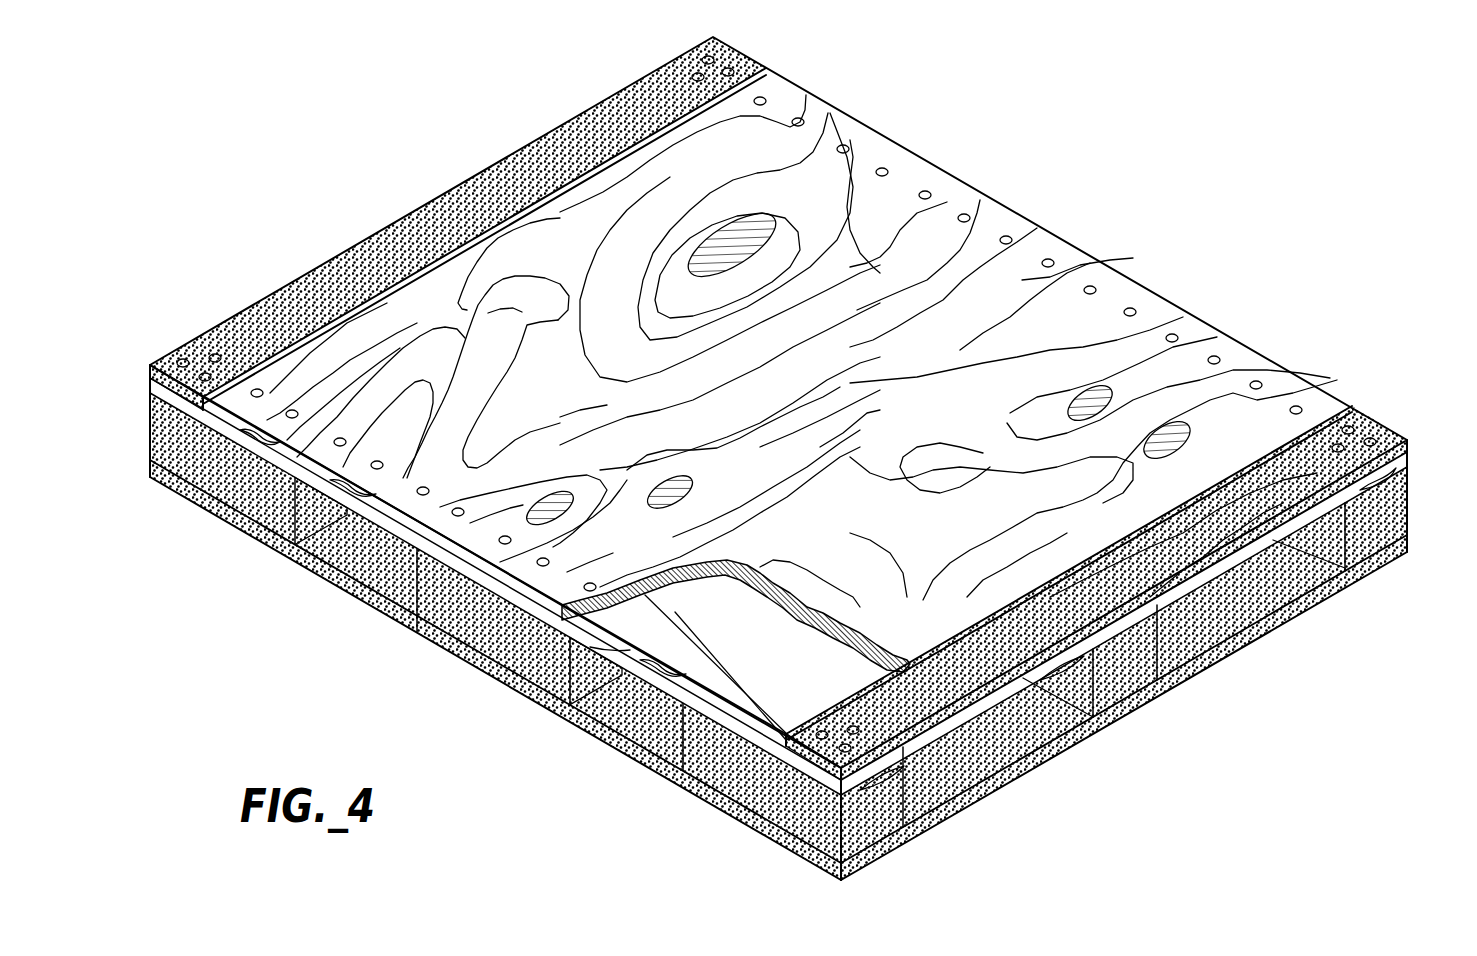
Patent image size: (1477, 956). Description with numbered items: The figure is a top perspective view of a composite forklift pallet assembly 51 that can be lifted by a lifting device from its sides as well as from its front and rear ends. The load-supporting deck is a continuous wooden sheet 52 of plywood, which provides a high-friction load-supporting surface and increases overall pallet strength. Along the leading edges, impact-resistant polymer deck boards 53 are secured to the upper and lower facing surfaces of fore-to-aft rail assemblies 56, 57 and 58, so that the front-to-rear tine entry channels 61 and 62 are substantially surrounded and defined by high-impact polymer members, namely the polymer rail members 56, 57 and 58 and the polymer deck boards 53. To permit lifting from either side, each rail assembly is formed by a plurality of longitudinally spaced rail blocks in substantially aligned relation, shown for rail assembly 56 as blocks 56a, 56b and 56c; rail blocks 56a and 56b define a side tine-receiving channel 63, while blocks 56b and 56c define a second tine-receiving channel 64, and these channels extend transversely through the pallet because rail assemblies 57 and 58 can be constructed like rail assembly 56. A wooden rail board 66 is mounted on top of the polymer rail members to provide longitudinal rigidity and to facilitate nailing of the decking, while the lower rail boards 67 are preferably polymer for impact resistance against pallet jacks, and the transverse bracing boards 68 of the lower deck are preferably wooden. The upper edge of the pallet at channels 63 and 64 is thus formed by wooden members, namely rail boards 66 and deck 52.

The composite forklift pallet assembly 51 is at (1093, 154).
The sheet of plywood 52 is at (540, 212).
The polymer deck boards 53 is at (390, 235).
The rail assembly 56 is at (868, 818).
The rail block 56a is at (722, 780).
The rail block 56b is at (440, 608).
The rail block 56c is at (192, 468).
The rail assembly 57 is at (1122, 678).
The rail assembly 58 is at (1375, 538).
The tine entry channel 61 is at (930, 778).
The tine entry channel 62 is at (1278, 588).
The tine-receiving channel 63 is at (650, 735).
The tine-receiving channel 64 is at (378, 564).
The wooden rail board 66 is at (1395, 476).
The polymer rail boards 67 is at (618, 718).
The transverse bracing boards 68 is at (485, 670).